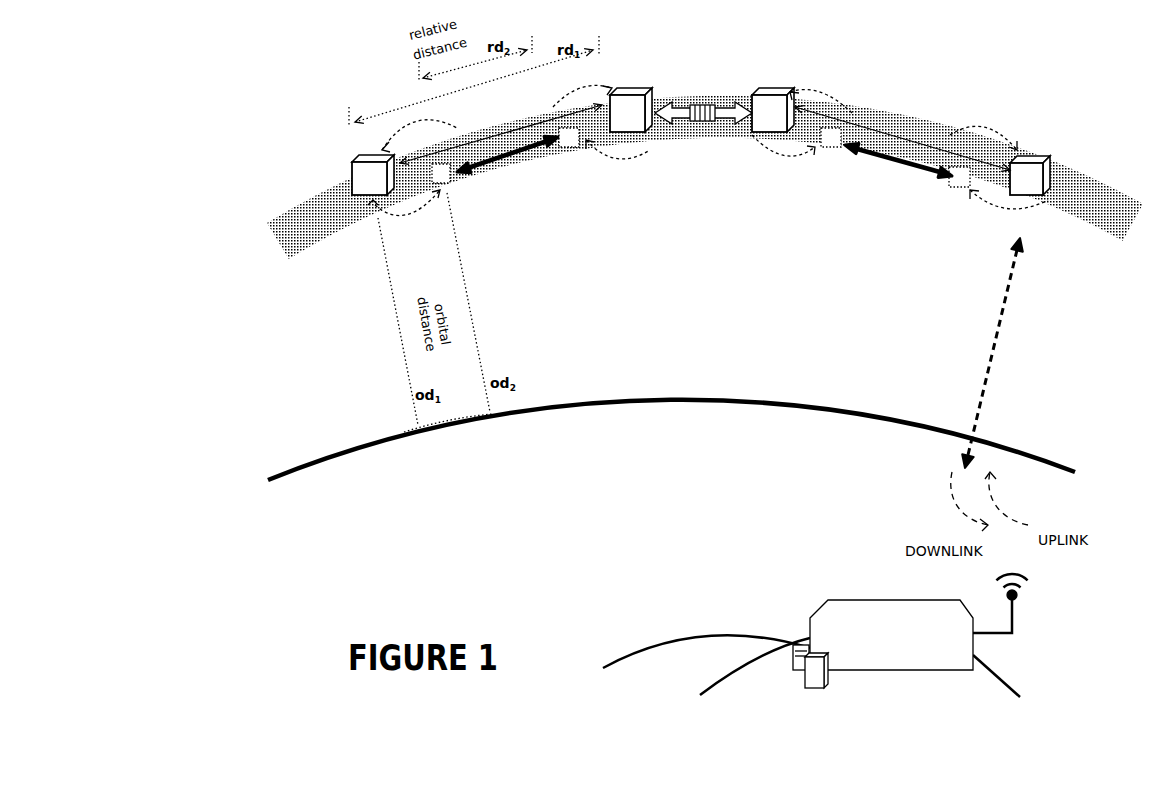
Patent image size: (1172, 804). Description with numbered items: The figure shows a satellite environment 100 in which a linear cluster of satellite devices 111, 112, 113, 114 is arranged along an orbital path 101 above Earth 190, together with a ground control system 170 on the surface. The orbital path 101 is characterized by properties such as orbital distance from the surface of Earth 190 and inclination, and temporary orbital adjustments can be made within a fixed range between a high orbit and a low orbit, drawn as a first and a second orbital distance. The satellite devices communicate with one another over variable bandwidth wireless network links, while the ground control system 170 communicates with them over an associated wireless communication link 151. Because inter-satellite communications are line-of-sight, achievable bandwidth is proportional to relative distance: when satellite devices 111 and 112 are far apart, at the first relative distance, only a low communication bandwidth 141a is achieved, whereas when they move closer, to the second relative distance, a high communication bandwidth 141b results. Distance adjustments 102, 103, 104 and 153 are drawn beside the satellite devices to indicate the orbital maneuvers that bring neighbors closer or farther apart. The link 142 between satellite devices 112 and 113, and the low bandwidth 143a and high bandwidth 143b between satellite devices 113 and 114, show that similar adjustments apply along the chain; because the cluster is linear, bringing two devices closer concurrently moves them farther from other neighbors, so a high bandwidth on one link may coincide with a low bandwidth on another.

The satellite environment 100 is at (284, 89).
The orbital path 101 is at (256, 150).
The distance adjustment 102 is at (412, 174).
The distance adjustment 103 is at (625, 141).
The distance adjustment 104 is at (996, 188).
The satellite device 111 is at (373, 175).
The satellite device 112 is at (631, 110).
The satellite device 113 is at (773, 110).
The satellite device 114 is at (1030, 175).
The low communication bandwidth 141a is at (501, 133).
The high communication bandwidth 141b is at (513, 170).
The variable bandwidth wireless network link 142 is at (703, 104).
The low bandwidth link 143a is at (902, 137).
The high bandwidth link 143b is at (891, 175).
The wireless communication link 151 is at (989, 353).
The target position of third satellite 153 is at (802, 134).
The ground control system 170 is at (815, 635).
The Earth 190 is at (653, 472).